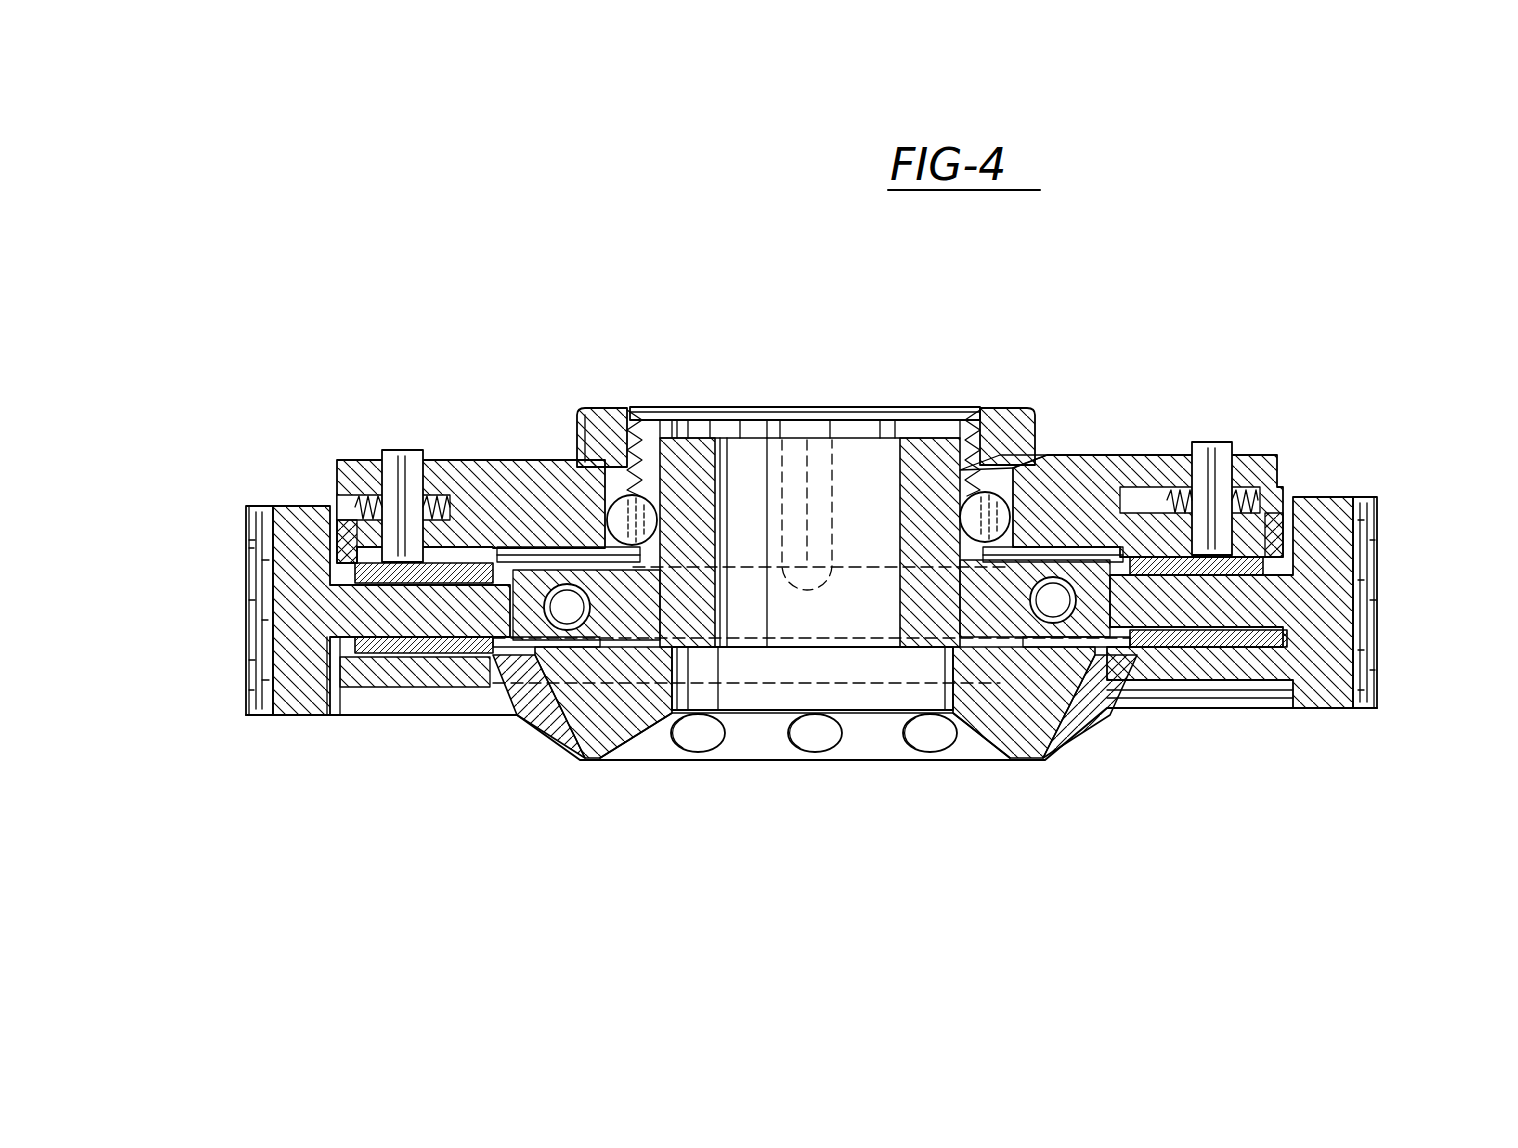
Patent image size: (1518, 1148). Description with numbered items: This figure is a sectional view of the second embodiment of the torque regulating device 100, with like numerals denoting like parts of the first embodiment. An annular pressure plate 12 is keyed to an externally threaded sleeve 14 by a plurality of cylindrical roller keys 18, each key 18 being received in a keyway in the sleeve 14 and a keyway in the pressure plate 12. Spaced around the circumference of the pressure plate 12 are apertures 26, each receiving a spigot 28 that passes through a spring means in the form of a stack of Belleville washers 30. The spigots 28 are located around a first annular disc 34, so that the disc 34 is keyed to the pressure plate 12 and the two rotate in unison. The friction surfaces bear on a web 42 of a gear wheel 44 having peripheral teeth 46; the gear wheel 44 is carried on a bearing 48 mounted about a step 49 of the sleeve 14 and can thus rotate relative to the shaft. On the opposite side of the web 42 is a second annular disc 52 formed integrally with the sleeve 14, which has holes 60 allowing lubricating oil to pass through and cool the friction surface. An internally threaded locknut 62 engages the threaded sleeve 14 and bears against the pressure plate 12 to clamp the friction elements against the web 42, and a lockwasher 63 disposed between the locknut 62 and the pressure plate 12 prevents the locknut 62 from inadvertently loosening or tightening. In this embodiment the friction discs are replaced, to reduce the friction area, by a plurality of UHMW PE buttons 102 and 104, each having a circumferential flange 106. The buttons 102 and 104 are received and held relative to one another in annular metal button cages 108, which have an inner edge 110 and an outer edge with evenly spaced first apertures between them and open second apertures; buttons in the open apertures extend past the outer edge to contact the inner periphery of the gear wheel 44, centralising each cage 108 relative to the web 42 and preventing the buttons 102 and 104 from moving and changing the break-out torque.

The torque regulating device 100 is at (655, 350).
The annular pressure plate 12 is at (1098, 470).
The externally threaded sleeve 14 is at (905, 460).
The cylindrical roller key 18 is at (622, 500).
The aperture 26 is at (428, 505).
The spigot 28 is at (396, 468).
The stack of Belleville washers 30 is at (345, 525).
The first annular disc 34 is at (345, 540).
The web 42 is at (368, 625).
The gear wheel 44 is at (297, 697).
The peripheral teeth 46 is at (258, 627).
The bearing 48 is at (540, 690).
The step 49 is at (560, 632).
The second annular disc 52 is at (1127, 692).
The holes 60 is at (672, 742).
The internally threaded locknut 62 is at (1003, 410).
The lockwasher 63 is at (1027, 466).
The UHMW PE button 102 is at (478, 530).
The UHMW PE button 104 is at (483, 660).
The circumferential flange 106 is at (360, 572).
The annular metal button cage 108 is at (262, 556).
The inner edge 110 is at (1335, 682).